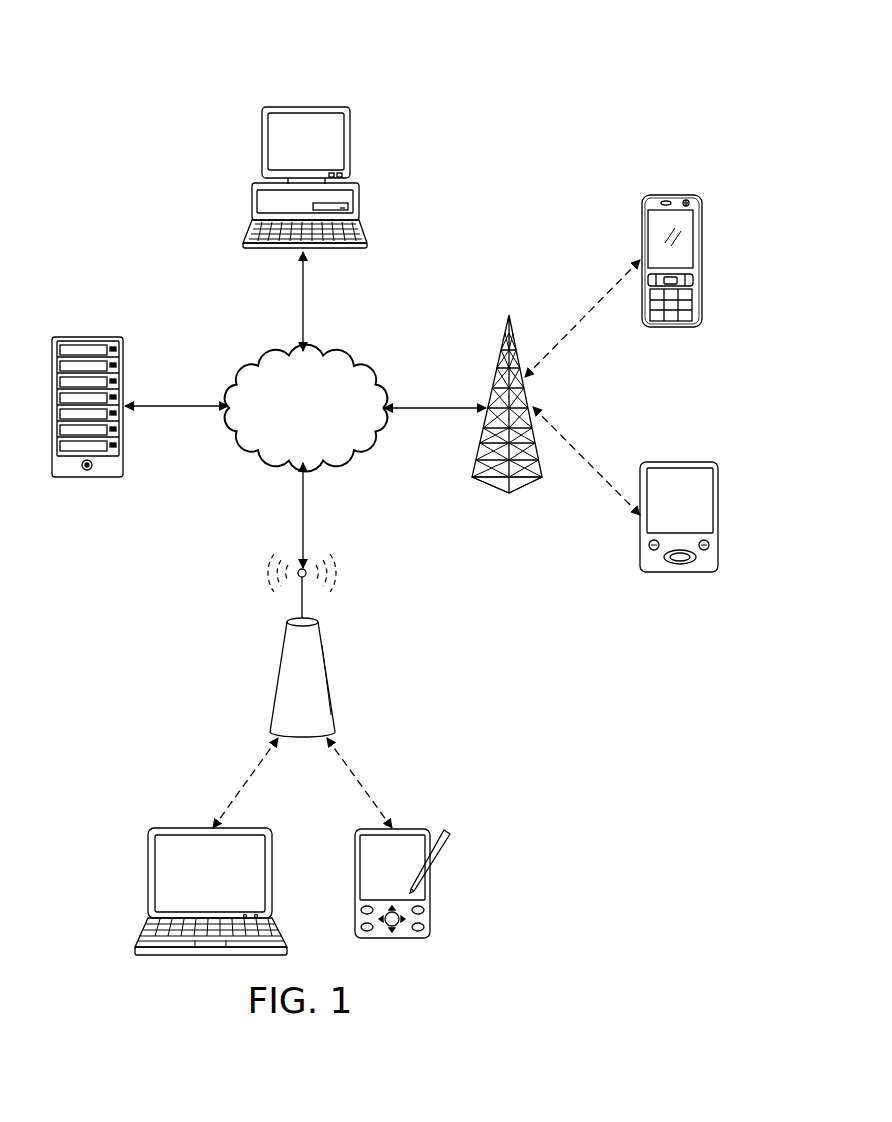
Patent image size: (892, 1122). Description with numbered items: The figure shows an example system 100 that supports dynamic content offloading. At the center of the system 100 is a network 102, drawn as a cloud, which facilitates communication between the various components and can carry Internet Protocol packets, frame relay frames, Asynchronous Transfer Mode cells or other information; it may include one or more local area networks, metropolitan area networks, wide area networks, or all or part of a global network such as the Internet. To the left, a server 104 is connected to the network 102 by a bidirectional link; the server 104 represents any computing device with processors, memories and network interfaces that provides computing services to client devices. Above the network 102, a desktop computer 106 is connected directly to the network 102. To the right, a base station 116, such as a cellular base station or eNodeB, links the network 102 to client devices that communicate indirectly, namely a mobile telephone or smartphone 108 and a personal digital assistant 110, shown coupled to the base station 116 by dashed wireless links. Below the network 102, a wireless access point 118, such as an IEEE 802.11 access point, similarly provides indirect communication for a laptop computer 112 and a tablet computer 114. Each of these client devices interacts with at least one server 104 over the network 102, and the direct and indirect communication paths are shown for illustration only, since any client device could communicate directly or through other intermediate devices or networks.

The system 100 is at (543, 92).
The network 102 is at (272, 358).
The server 104 is at (88, 337).
The desktop computer 106 is at (299, 107).
The mobile telephone or smartphone 108 is at (670, 195).
The personal digital assistant (PDA) 110 is at (680, 462).
The laptop computer 112 is at (148, 873).
The tablet computer 114 is at (430, 900).
The base station 116 is at (527, 488).
The wireless access point 118 is at (277, 673).